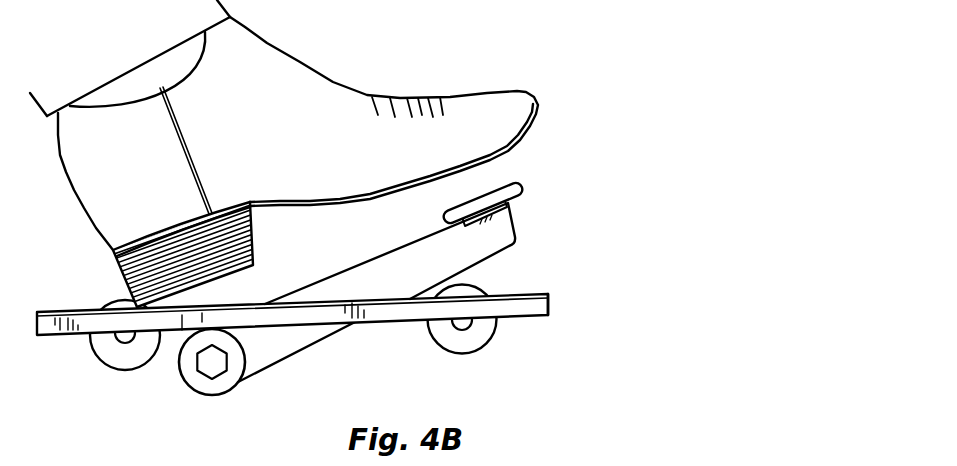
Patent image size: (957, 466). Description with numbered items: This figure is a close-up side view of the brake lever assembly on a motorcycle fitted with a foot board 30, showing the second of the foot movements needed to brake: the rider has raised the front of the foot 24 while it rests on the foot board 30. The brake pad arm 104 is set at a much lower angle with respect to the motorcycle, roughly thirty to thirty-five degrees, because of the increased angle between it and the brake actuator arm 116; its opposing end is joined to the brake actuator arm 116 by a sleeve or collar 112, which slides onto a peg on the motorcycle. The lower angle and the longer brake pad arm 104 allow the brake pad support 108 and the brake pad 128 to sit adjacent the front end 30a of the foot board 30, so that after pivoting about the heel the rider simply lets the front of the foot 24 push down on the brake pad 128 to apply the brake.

The foot 24 is at (286, 140).
The foot board 30 is at (360, 322).
The front end of the foot board 30a is at (548, 307).
The brake pad arm 104 is at (495, 238).
The brake pad support 108 is at (512, 221).
The sleeve or collar 112 is at (230, 368).
The brake actuator arm 116 is at (180, 332).
The brake pad 128 is at (524, 185).